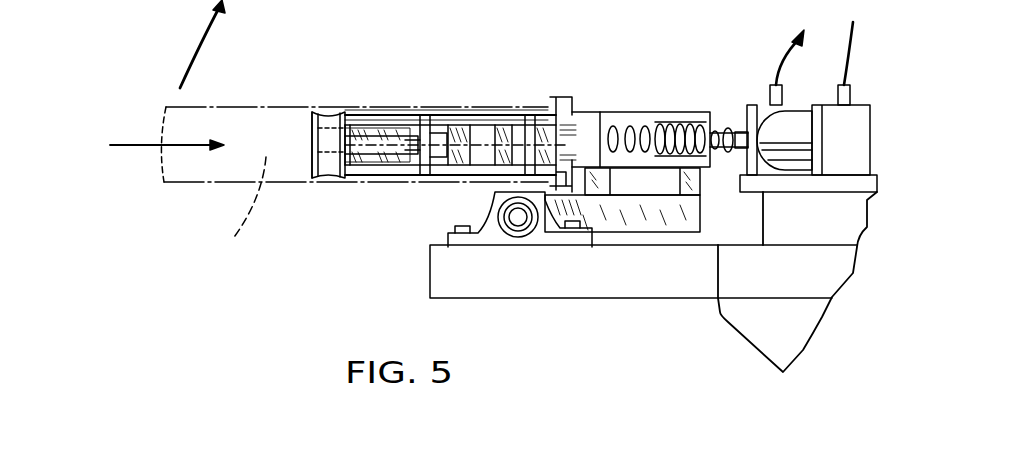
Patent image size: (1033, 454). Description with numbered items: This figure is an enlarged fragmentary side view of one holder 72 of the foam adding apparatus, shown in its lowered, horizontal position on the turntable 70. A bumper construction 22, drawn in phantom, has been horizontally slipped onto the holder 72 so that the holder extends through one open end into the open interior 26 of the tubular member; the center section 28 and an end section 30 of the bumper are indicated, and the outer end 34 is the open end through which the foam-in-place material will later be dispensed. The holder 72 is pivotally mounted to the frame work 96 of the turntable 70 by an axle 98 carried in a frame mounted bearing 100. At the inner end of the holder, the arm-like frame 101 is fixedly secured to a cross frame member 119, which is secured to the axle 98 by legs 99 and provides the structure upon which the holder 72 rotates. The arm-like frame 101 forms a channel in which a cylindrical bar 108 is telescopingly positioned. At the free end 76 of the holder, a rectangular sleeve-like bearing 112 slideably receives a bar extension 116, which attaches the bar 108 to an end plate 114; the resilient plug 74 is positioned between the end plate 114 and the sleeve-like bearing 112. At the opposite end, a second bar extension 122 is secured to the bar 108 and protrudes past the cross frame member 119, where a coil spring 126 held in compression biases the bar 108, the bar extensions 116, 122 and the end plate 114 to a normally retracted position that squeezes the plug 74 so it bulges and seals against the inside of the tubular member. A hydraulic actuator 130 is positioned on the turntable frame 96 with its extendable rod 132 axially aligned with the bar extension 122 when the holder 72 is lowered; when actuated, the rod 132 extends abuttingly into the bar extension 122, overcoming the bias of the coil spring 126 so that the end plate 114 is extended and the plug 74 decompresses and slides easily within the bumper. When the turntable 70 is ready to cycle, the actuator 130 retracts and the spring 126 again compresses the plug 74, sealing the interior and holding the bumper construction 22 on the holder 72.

The bumper construction 22 is at (160, 106).
The open interior 26 is at (235, 210).
The center section 28 is at (250, 106).
The end section 30 is at (447, 112).
The outer end 34 is at (560, 104).
The turntable 70 is at (720, 322).
The holder 72 is at (398, 108).
The plug 74 is at (330, 118).
The free end 76 is at (365, 173).
The frame work 96 is at (430, 278).
The axle 98 is at (516, 216).
The leg 99 is at (612, 184).
The frame mounted bearing 100 is at (498, 240).
The arm-like frame 101 is at (490, 114).
The cylindrical bar 108 is at (450, 150).
The sleeve-like bearing 112 is at (365, 125).
The end plate 114 is at (313, 168).
The bar extension 116 is at (422, 142).
The cross frame member 119 is at (640, 112).
The second bar extension 122 is at (613, 126).
The coil spring 126 is at (680, 127).
The hydraulic actuator 130 is at (795, 128).
The extendable rod 132 is at (740, 134).